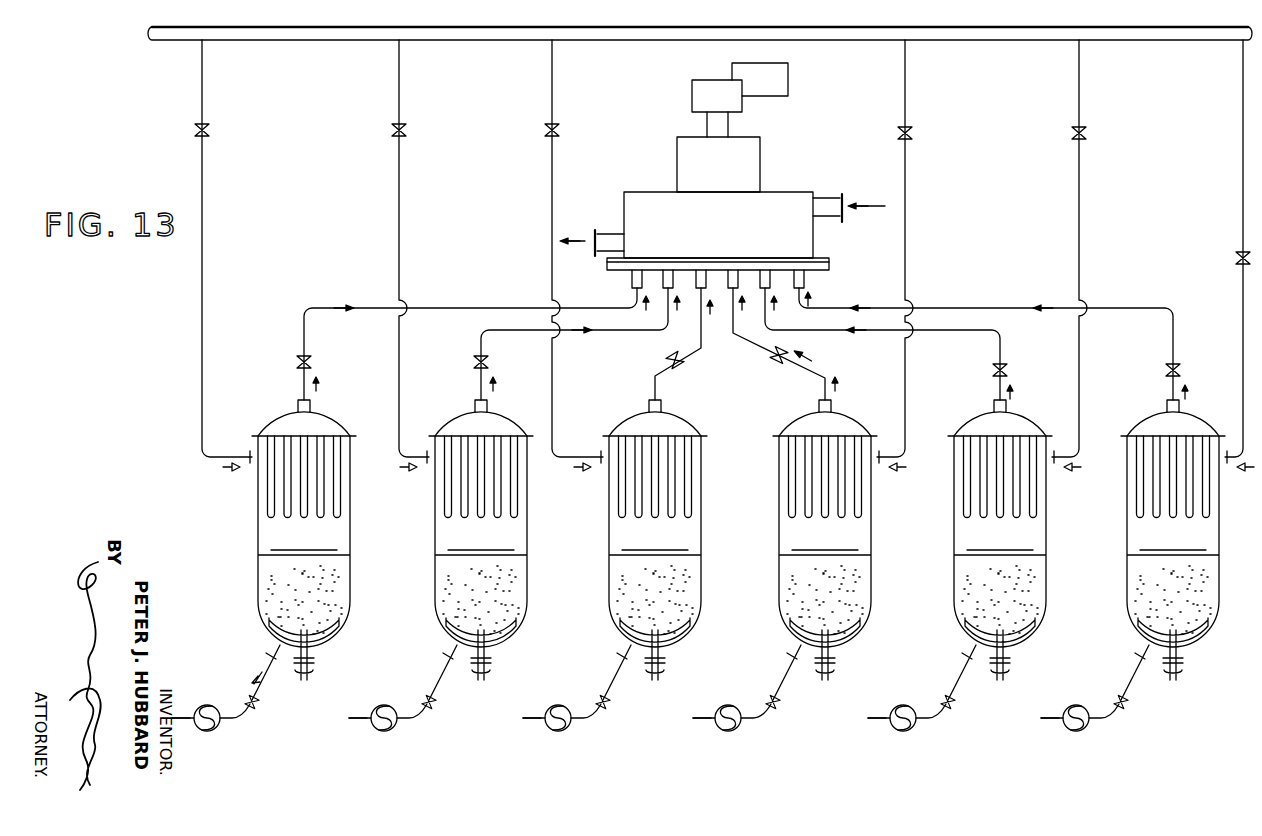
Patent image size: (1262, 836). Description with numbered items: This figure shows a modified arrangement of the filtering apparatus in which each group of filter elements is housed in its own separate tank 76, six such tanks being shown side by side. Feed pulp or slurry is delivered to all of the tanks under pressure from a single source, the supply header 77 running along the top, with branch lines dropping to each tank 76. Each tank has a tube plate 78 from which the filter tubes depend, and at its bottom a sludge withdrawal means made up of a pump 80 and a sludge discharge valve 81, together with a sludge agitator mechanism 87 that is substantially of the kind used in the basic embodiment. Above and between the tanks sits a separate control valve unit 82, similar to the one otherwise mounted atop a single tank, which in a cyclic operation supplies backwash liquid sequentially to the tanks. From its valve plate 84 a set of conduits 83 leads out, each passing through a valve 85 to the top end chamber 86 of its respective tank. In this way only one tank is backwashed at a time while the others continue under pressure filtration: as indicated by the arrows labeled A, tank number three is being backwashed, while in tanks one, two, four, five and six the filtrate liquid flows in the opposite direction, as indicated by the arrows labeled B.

The tank 76 is at (350, 550).
The supply header 77 is at (583, 42).
The tube plate 78 is at (514, 436).
The pump 80 is at (212, 730).
The sludge discharge valve 81 is at (256, 704).
The control valve unit 82 is at (606, 211).
The conduit 83 is at (470, 306).
The valve plate 84 is at (607, 268).
The valve 85 is at (310, 360).
The top end chamber 86 is at (283, 424).
The sludge agitator mechanism 87 is at (335, 636).